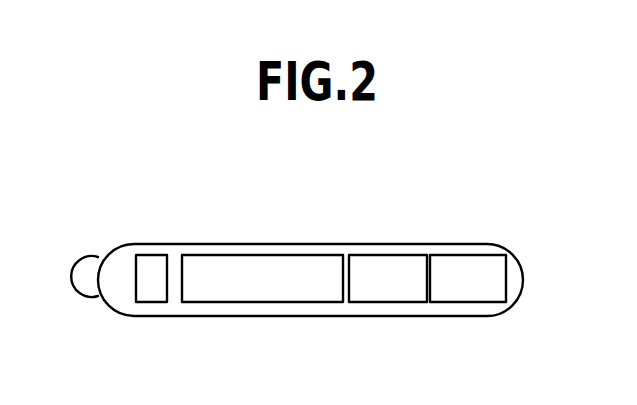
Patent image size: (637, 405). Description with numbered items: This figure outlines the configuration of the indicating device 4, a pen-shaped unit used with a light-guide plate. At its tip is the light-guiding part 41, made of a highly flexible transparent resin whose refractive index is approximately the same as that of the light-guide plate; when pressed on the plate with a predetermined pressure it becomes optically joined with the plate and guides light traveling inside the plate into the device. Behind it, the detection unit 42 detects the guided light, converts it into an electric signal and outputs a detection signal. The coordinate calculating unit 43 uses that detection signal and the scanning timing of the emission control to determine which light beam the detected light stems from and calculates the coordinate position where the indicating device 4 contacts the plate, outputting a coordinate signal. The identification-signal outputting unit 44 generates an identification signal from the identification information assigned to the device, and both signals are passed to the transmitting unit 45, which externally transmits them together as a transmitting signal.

The indicating device 4 is at (463, 315).
The light-guiding part 41 is at (90, 257).
The detection unit 42 is at (150, 258).
The coordinate calculating unit 43 is at (237, 255).
The identification-signal outputting unit 44 is at (367, 255).
The transmitting unit 45 is at (496, 258).